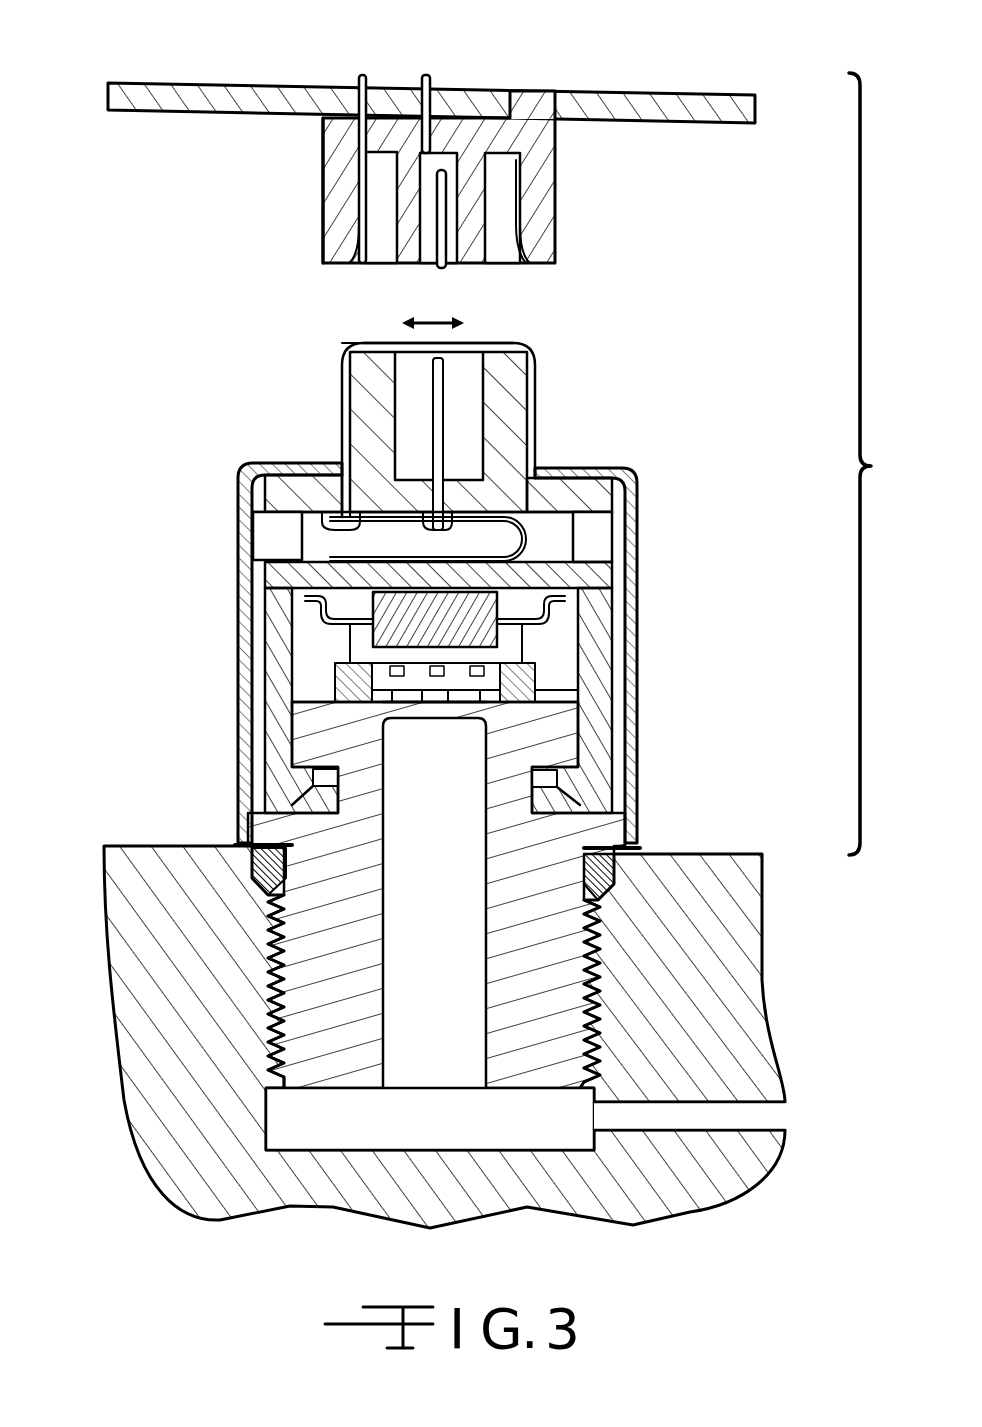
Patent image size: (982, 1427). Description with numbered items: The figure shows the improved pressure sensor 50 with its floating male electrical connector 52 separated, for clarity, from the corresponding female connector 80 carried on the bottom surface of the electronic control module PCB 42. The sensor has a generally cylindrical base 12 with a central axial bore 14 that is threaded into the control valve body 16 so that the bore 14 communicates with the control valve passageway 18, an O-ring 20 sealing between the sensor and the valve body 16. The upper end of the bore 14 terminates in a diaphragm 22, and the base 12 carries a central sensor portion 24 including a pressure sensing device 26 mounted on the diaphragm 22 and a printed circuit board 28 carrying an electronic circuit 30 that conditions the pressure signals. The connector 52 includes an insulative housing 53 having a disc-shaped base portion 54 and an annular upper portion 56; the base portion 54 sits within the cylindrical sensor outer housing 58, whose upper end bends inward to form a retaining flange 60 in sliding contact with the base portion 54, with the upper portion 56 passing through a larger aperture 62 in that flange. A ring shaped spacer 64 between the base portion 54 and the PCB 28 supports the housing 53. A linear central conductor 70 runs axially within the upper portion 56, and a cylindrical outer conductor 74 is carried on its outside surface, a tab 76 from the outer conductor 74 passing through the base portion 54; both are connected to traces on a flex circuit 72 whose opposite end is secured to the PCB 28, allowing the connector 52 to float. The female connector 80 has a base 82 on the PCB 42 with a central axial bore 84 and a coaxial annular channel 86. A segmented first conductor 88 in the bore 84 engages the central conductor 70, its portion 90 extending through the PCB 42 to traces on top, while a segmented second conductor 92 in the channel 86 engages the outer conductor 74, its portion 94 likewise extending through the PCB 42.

The base 12 is at (368, 858).
The central axial bore 14 is at (434, 956).
The control valve body 16 is at (724, 868).
The control valve passageway 18 is at (748, 1118).
The O-ring 20 is at (616, 866).
The diaphragm 22 is at (417, 710).
The central sensor portion 24 is at (562, 657).
The pressure sensing device 26 is at (376, 687).
The printed circuit board 28 is at (280, 575).
The electronic circuit 30 is at (364, 642).
The electronic control module PCB 42 is at (672, 100).
The pressure sensor 50 is at (722, 428).
The floating male electrical connector 52 is at (246, 381).
The connector housing 53 is at (603, 357).
The base portion 54 is at (587, 465).
The annular upper portion 56 is at (497, 365).
The sensor outer housing 58 is at (630, 540).
The retaining flange 60 is at (267, 462).
The aperture 62 is at (320, 442).
The spacer 64 is at (267, 540).
The central conductor 70 is at (445, 397).
The flex circuit 72 is at (423, 553).
The outer conductor 74 is at (537, 422).
The tab 76 is at (343, 530).
The female connector 80 is at (592, 214).
The base 82 is at (323, 183).
The central axial bore 84 is at (452, 272).
The annular channel 86 is at (363, 272).
The first cylindrical electrical conductor 88 is at (437, 264).
The portion of first conductor 90 is at (426, 74).
The second segmented electrical conductor 92 is at (506, 250).
The portion of second conductor 94 is at (362, 72).